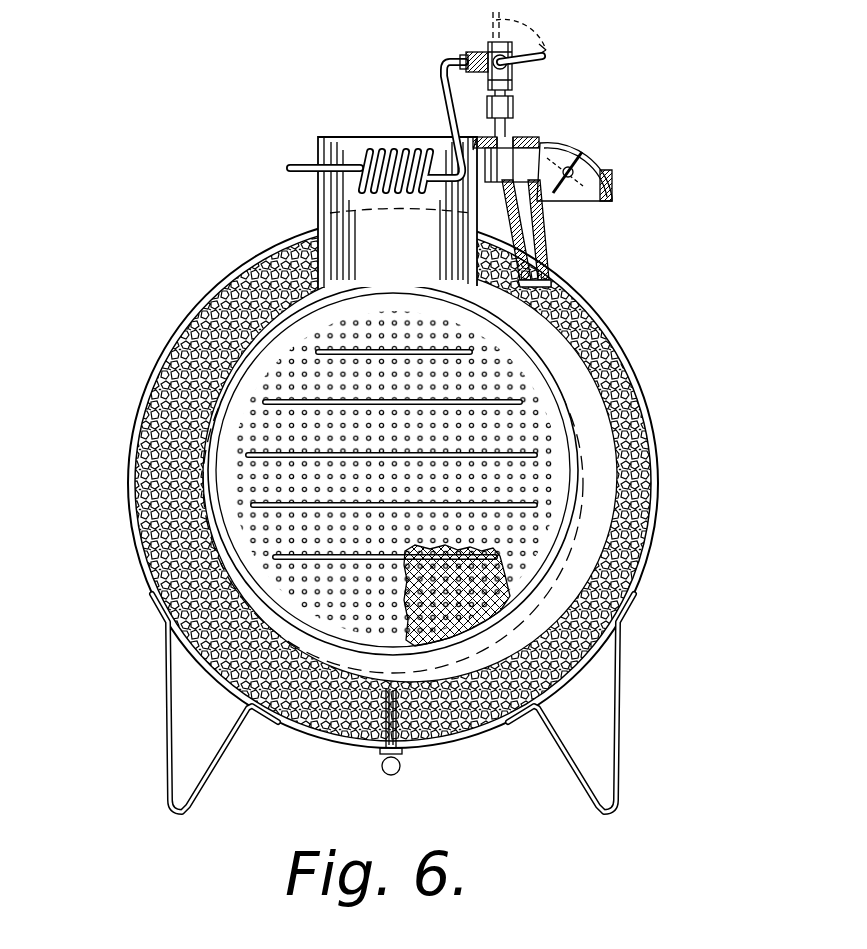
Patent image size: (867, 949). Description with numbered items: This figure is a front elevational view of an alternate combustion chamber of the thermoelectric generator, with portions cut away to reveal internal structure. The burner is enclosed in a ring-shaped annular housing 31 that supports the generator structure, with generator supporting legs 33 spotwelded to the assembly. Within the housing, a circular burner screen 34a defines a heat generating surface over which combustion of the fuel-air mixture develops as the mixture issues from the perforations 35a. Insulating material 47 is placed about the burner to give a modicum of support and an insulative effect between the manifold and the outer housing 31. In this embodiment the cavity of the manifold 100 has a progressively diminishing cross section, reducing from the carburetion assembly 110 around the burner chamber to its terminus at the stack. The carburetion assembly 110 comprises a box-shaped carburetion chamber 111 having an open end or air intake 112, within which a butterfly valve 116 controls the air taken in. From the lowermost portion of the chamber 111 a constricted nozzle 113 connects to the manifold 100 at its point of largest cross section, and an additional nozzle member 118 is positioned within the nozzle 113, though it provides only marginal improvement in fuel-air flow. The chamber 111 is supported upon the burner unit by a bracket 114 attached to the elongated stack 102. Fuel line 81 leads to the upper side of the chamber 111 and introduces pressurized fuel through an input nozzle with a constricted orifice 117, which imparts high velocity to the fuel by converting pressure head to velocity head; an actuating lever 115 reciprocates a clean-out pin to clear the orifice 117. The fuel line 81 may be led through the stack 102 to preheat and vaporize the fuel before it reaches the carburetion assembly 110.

The annular housing 31 is at (652, 378).
The generator supporting legs 33 is at (166, 742).
The burner screen 34a is at (462, 643).
The perforations 35a is at (555, 430).
The insulating material 47 is at (152, 574).
The fuel line 81 is at (464, 62).
The manifold 100 is at (405, 483).
The elongated stack 102 is at (318, 142).
The carburetion assembly 110 is at (611, 221).
The carburetion chamber 111 is at (631, 178).
The air intake 112 is at (600, 205).
The constricted nozzle 113 is at (548, 240).
The bracket 114 is at (515, 130).
The actuating lever 115 is at (548, 58).
The butterfly valve 116 is at (598, 168).
The constricted orifice 117 is at (540, 141).
The additional nozzle member 118 is at (560, 286).